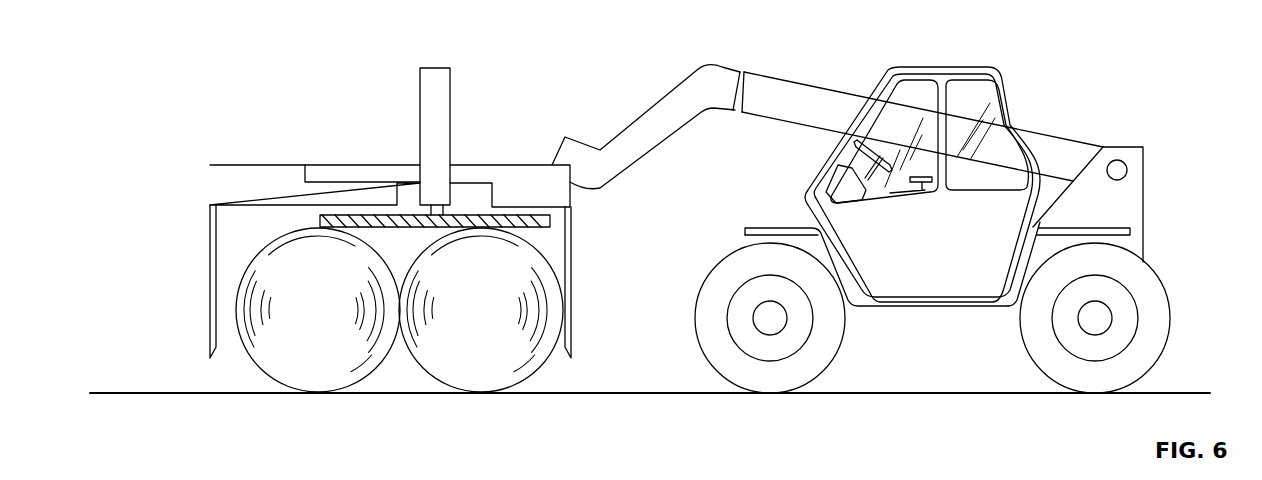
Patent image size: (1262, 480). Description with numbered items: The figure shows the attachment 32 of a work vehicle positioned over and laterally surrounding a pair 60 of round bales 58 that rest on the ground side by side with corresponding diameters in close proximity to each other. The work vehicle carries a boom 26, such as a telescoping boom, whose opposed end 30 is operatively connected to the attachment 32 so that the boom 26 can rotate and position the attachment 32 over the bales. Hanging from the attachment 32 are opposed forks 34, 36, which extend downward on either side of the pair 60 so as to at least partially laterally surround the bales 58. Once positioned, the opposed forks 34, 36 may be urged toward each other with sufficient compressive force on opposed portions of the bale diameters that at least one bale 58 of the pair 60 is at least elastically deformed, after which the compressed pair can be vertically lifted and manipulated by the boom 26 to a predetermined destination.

The boom 26 is at (775, 120).
The opposed end 30 is at (516, 154).
The attachment 32 is at (338, 131).
The opposed fork 34 is at (571, 243).
The opposed fork 36 is at (208, 283).
The round bale 58 is at (374, 369).
The pair of round bales 60 is at (231, 403).